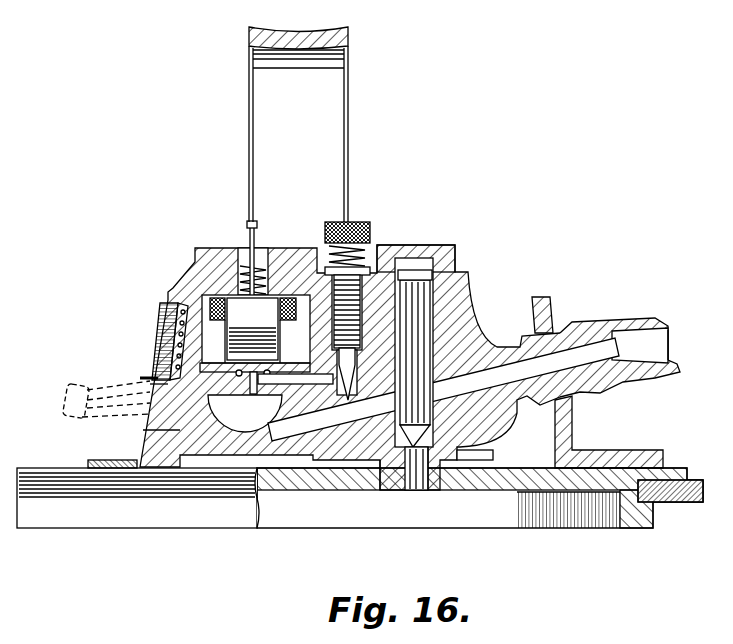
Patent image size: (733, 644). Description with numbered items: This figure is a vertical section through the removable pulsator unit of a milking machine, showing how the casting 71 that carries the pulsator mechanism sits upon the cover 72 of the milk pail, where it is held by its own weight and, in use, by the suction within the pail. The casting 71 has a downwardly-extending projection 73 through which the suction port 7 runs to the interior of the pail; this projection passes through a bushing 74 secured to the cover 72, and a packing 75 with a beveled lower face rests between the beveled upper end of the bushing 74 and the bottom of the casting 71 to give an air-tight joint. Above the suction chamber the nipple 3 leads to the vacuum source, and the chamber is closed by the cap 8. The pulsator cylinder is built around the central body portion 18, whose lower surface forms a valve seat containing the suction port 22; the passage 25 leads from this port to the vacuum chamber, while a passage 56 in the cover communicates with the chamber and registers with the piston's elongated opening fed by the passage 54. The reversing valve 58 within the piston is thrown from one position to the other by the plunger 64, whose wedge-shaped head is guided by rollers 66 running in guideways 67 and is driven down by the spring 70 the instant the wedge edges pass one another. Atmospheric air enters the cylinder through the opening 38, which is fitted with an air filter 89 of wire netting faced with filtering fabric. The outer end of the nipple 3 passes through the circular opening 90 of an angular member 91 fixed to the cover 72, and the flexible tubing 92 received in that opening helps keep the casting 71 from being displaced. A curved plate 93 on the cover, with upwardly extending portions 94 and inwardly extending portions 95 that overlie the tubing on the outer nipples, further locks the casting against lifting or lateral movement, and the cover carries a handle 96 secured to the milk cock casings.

The nipple 3 is at (600, 321).
The suction port 7 is at (418, 489).
The cap 8 is at (447, 244).
The central body portion 18 is at (325, 232).
The suction port 22 is at (247, 420).
The passage 25 is at (385, 402).
The opening 38 is at (150, 378).
The passage 54 is at (276, 386).
The passage 56 is at (340, 406).
The reversing valve 58 is at (190, 381).
The plunger 64 is at (249, 222).
The rollers 66 is at (200, 298).
The guideways 67 is at (213, 339).
The spring 70 is at (263, 267).
The casting 71 is at (476, 318).
The cover 72 is at (607, 517).
The downwardly-extending projection 73 is at (437, 491).
The bushing 74 is at (379, 486).
The packing 75 is at (495, 453).
The air filter 89 is at (163, 323).
The circular opening 90 is at (550, 328).
The angular member 91 is at (610, 452).
The flexible tubing 92 is at (669, 366).
The curved plate 93 is at (100, 459).
The upwardly extending portions 94 is at (150, 395).
The inwardly extending portions 95 is at (150, 395).
The handle 96 is at (337, 85).